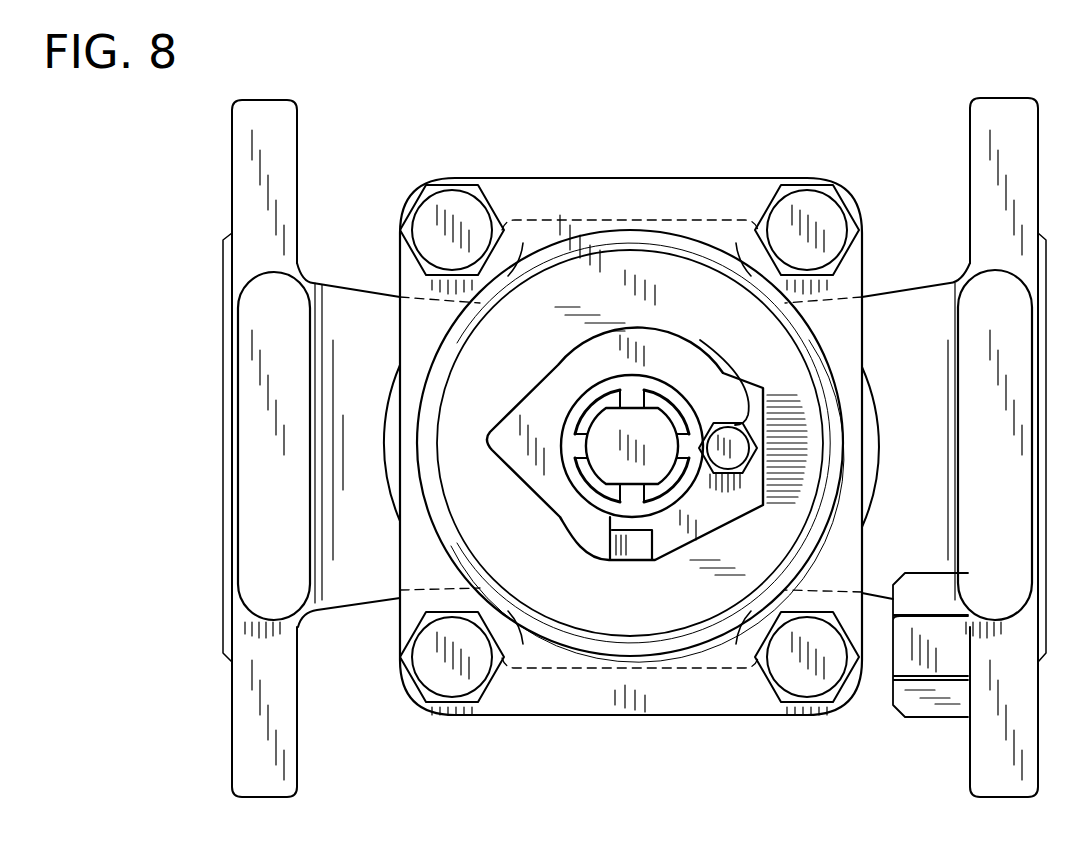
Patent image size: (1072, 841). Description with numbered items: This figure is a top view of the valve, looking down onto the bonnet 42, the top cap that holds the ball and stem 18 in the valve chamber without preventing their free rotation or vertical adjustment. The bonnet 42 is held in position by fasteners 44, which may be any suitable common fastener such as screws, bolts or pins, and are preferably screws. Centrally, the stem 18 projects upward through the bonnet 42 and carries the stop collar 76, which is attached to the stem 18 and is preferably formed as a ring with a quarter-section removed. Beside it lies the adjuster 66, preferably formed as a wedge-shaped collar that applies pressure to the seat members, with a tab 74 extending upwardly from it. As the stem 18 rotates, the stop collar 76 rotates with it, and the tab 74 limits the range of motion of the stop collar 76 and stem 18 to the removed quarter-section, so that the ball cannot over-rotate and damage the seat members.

The bonnet 42 is at (640, 197).
The fasteners 44 is at (766, 677).
The stem 18 is at (652, 420).
The stop collar 76 is at (557, 382).
The adjuster 66 is at (730, 503).
The tab 74 is at (631, 545).